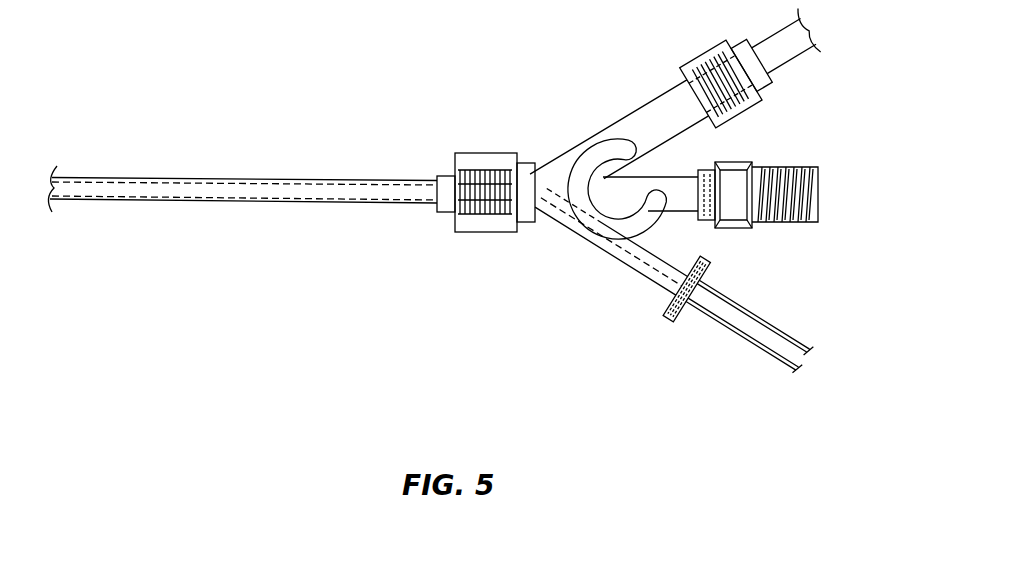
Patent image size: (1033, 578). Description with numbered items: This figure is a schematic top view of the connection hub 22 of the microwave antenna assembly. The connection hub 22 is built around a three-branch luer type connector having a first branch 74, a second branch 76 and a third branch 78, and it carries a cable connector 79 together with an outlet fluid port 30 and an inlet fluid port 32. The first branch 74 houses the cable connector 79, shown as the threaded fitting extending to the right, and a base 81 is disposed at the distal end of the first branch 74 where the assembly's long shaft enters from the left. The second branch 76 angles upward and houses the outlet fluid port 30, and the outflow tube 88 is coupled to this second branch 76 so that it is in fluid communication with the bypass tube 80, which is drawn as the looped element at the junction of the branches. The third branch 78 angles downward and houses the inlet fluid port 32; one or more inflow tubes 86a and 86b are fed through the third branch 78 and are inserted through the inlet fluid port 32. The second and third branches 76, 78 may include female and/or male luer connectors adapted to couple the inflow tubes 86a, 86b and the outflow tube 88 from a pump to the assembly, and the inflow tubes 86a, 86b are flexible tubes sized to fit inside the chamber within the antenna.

The connection hub 22 is at (583, 88).
The outlet fluid port 30 is at (683, 80).
The second branch 76 is at (662, 107).
The outflow tube 88 is at (787, 35).
The bypass tube 80 is at (597, 147).
The base 81 is at (490, 152).
The cable connector 79 is at (780, 165).
The first branch 74 is at (679, 214).
The third branch 78 is at (623, 263).
The inlet fluid port 32 is at (663, 310).
The inflow tube 86a is at (730, 335).
The inflow tube 86b is at (752, 318).